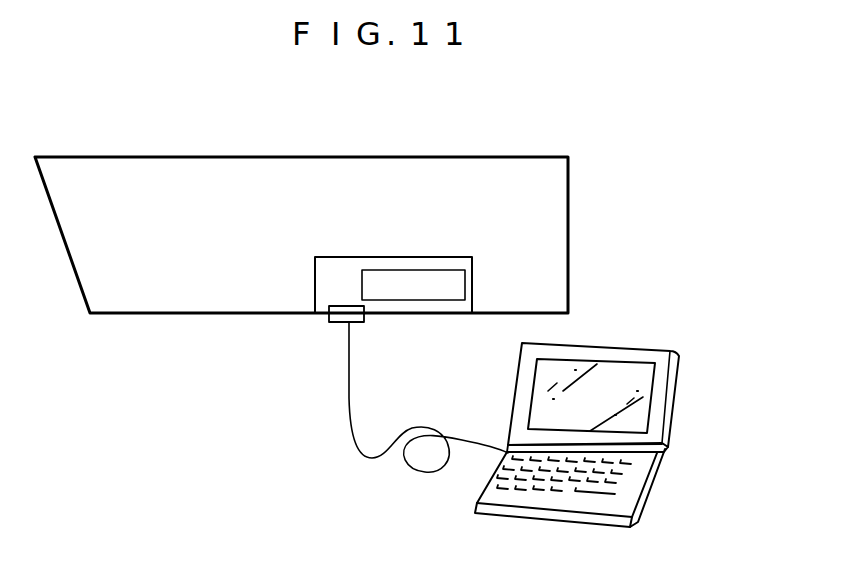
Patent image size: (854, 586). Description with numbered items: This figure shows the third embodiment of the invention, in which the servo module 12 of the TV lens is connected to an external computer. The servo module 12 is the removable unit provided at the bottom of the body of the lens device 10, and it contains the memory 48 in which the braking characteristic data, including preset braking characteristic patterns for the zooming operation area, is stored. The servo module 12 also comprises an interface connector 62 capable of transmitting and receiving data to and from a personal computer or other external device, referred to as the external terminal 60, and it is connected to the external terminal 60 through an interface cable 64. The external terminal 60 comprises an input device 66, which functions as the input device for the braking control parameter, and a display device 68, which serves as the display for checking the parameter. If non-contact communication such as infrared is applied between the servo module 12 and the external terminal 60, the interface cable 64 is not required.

The lens device 10 is at (324, 165).
The servo module 12 is at (427, 258).
The memory 48 is at (466, 281).
The interface connector 62 is at (322, 321).
The interface cable 64 is at (349, 398).
The external terminal 60 is at (588, 430).
The input device 66 is at (518, 481).
The display device 68 is at (618, 376).